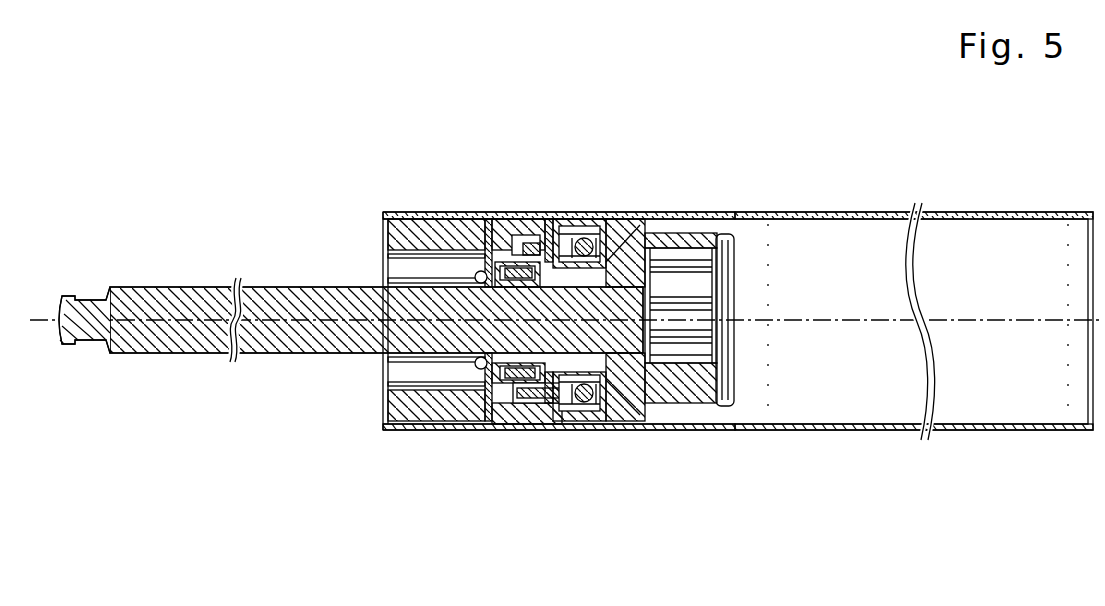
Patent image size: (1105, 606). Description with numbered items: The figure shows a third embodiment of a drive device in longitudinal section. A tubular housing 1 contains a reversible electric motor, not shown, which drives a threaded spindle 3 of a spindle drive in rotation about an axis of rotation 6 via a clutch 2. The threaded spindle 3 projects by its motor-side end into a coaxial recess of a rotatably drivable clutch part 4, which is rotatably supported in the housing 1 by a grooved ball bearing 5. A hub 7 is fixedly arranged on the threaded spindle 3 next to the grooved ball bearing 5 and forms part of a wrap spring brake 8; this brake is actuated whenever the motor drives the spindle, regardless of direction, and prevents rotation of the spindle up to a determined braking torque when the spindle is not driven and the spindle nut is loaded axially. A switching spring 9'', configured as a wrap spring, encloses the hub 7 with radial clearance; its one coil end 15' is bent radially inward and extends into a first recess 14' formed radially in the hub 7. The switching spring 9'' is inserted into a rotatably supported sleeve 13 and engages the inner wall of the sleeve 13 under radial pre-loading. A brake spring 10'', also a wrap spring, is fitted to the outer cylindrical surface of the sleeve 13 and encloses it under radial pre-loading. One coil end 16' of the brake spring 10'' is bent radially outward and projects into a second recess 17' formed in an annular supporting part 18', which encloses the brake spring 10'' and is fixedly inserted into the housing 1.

The tubular housing 1 is at (1007, 213).
The clutch 2 is at (694, 220).
The threaded spindle 3 is at (127, 287).
The clutch part 4 is at (655, 245).
The grooved ball bearing 5 is at (587, 228).
The axis of rotation 6 is at (193, 320).
The hub 7 is at (485, 378).
The wrap spring brake 8 is at (552, 431).
The switching spring 9'' is at (502, 390).
The brake spring 10'' is at (619, 470).
The sleeve 13 is at (590, 408).
The first recess 14' is at (372, 257).
The coil end of the switching spring 15' is at (422, 236).
The coil end of the brake spring 16' is at (510, 231).
The second recess 17' is at (541, 149).
The supporting part 18' is at (538, 493).